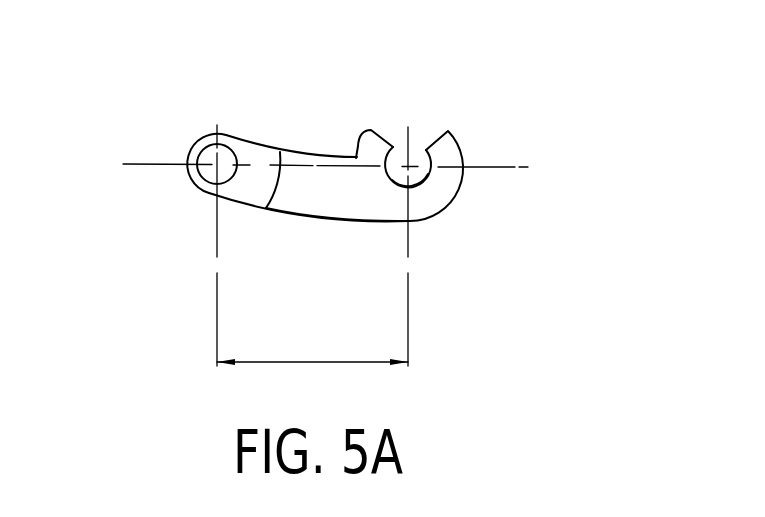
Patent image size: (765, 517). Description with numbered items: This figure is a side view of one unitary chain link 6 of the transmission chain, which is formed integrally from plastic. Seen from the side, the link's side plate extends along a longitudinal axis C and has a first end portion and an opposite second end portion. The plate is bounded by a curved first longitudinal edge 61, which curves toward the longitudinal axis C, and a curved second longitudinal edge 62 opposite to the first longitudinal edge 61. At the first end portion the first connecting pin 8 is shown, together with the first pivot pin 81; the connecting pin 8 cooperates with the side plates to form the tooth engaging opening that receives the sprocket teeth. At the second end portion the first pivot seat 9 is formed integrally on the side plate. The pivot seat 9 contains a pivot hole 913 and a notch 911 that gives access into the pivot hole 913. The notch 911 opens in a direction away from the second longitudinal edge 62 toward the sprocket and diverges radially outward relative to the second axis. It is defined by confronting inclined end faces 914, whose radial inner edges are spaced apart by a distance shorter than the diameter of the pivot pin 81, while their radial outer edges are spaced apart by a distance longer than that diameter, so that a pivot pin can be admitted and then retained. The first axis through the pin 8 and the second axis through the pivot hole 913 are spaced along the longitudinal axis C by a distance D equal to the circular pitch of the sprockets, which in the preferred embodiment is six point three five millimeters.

The unitary chain link 6 is at (336, 136).
The first longitudinal edge 61 is at (259, 145).
The second longitudinal edge 62 is at (293, 217).
The first connecting pin 8 is at (178, 121).
The first pivot pin 81 is at (230, 152).
The first pivot seat 9 is at (478, 203).
The notch 911 is at (417, 152).
The pivot hole 913 is at (418, 180).
The inclined end face 914 is at (386, 141).
The longitudinal axis C is at (307, 166).
The distance D is at (312, 245).